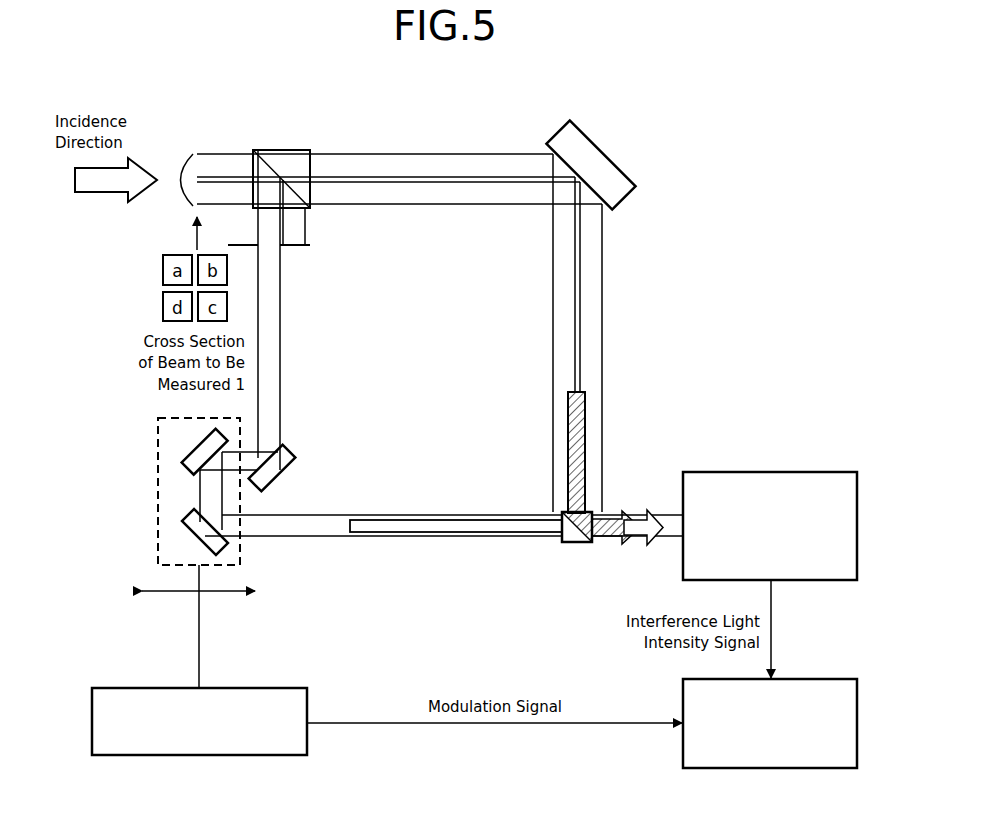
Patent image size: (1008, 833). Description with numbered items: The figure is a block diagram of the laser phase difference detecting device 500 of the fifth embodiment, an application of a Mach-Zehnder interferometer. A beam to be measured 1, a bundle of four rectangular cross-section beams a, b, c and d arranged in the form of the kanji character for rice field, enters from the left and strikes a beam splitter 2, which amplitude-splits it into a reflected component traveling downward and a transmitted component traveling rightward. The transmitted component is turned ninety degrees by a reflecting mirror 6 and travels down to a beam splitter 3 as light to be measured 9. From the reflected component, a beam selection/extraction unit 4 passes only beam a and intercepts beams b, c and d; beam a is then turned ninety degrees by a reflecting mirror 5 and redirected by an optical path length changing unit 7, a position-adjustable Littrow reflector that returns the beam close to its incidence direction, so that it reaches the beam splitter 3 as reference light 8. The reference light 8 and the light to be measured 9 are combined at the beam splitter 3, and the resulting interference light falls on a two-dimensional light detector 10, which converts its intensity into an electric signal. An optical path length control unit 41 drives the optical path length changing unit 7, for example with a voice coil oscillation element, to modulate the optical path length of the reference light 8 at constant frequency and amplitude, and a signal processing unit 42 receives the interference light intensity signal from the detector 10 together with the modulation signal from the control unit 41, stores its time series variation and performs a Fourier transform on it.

The laser phase difference detecting device 500 is at (622, 80).
The beam to be measured 1 is at (191, 152).
The beam splitter 2 is at (282, 150).
The beam splitter 3 is at (578, 545).
The beam selection/extraction unit 4 is at (312, 246).
The reflecting mirror 5 is at (298, 456).
The reflecting mirror 6 is at (613, 158).
The optical path length changing unit 7 is at (158, 462).
The reference light 8 is at (465, 520).
The light to be measured 9 is at (586, 418).
The two-dimensional light detector 10 is at (771, 472).
The optical path length control unit 41 is at (255, 688).
The signal processing unit 42 is at (771, 770).